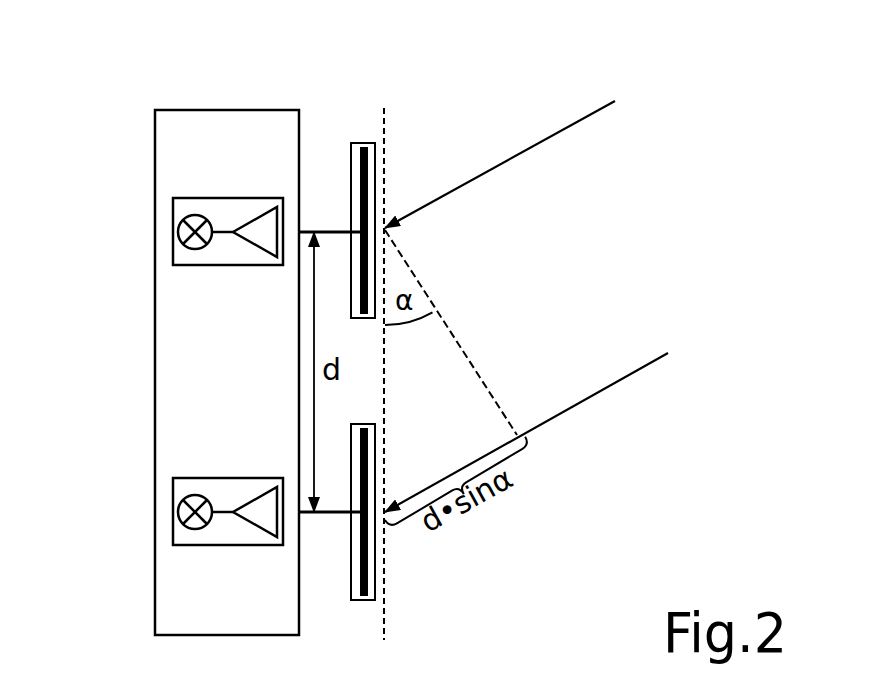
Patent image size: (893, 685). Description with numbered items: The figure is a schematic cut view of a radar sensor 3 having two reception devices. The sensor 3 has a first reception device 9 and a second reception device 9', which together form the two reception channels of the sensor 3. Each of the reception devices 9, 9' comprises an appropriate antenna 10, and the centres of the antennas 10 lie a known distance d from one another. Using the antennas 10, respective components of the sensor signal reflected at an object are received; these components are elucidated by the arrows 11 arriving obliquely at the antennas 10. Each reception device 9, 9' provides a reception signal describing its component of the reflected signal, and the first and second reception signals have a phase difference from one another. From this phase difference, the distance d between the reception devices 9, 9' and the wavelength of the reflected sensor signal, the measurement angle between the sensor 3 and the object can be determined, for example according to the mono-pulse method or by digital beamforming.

The sensor 3 is at (157, 85).
The first reception device 9 is at (208, 231).
The second reception device 9' is at (207, 511).
The antenna 10 is at (362, 143).
The arrows 11 is at (577, 120).